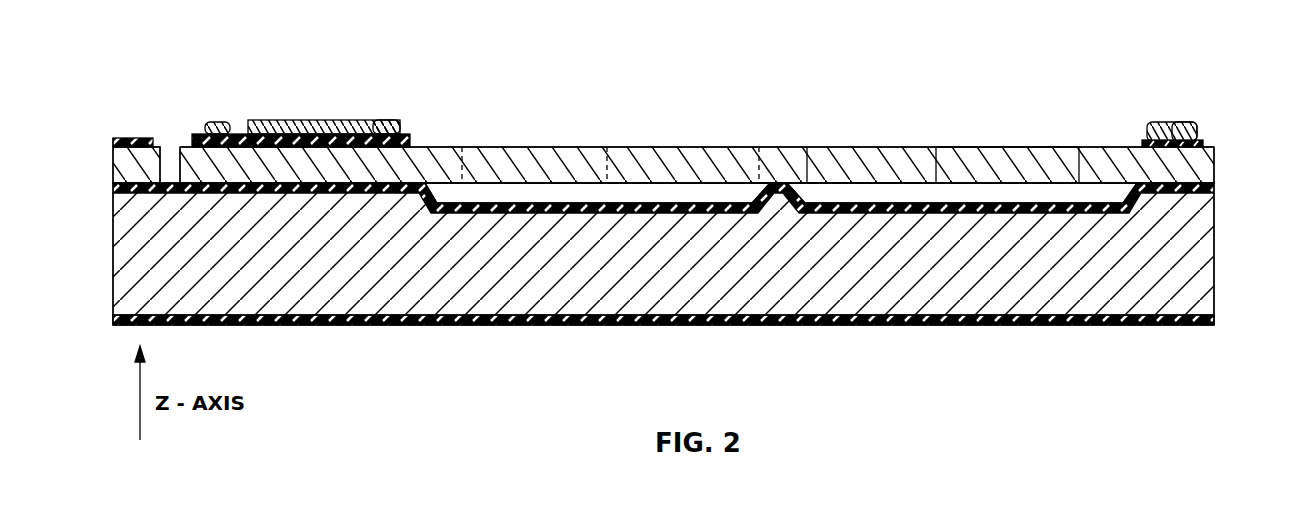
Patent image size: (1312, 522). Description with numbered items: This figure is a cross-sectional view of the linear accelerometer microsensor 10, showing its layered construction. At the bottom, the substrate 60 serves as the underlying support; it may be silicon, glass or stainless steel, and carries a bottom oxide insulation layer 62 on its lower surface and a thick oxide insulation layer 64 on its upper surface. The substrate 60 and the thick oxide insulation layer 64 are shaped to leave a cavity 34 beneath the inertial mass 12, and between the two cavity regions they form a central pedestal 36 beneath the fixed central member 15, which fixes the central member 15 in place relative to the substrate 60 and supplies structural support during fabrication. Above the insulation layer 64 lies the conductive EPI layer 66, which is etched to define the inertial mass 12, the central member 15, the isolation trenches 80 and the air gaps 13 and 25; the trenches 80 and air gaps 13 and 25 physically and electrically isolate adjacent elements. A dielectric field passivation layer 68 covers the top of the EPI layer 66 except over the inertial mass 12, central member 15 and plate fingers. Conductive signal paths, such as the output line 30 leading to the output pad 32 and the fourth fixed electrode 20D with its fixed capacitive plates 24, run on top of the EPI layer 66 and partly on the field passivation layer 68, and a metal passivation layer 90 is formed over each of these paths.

The linear accelerometer microsensor 10 is at (90, 120).
The inertial mass 12 is at (696, 138).
The air gaps 13 is at (759, 147).
The central member 15 is at (771, 147).
The fourth fixed electrode 20D is at (1170, 122).
The fixed capacitive plates 24 is at (972, 147).
The air gaps 25 is at (462, 147).
The output line 30 is at (303, 121).
The output pad 32 is at (240, 134).
The cavity 34 is at (637, 192).
The central pedestal 36 is at (812, 180).
The substrate 60 is at (1215, 250).
The bottom oxide insulation layer 62 is at (1215, 322).
The thick oxide insulation layer 64 is at (1215, 190).
The EPI layer 66 is at (1215, 165).
The field passivation layer 68 is at (1206, 144).
The isolation trenches 80 is at (172, 147).
The metal passivation layer 90 is at (393, 122).